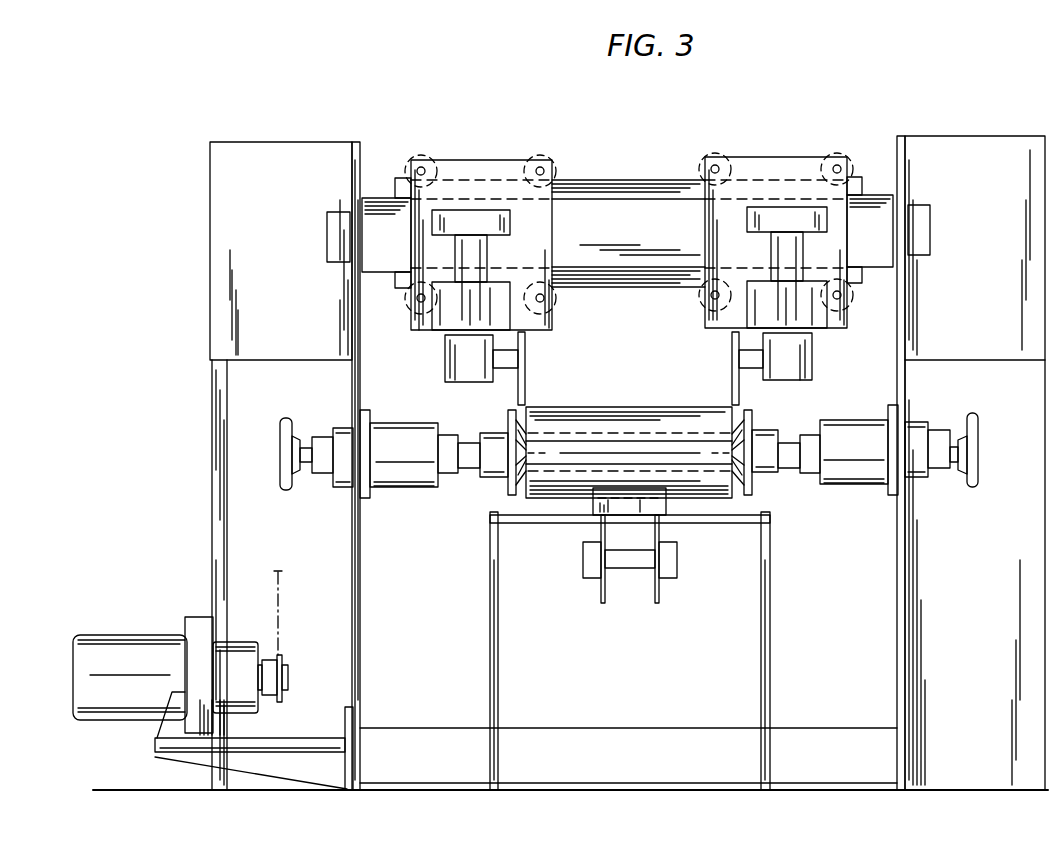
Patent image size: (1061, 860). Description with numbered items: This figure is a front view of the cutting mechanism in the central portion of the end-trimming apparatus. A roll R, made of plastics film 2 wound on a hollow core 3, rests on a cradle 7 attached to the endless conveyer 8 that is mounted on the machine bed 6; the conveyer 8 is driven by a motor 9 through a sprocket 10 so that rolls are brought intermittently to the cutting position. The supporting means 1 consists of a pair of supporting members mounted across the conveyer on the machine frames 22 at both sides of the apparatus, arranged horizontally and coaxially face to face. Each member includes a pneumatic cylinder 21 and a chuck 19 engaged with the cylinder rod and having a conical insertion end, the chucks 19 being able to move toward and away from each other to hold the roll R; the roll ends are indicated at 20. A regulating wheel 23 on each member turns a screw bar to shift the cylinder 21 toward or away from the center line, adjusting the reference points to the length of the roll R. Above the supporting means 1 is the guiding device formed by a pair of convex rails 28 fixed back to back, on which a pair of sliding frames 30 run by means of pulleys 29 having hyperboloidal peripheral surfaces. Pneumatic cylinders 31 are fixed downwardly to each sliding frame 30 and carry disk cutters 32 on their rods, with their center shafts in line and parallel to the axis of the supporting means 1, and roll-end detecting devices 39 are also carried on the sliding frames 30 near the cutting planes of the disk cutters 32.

The supporting means 1 is at (452, 500).
The plastics film 2 is at (590, 410).
The hollow core 3 is at (650, 432).
The roll R is at (632, 408).
The machine bed 6 is at (770, 565).
The cradle 7 is at (596, 500).
The endless conveyer 8 is at (662, 533).
The motor 9 is at (165, 635).
The sprocket 10 is at (282, 668).
The chuck 19 is at (494, 480).
The roll end 20 is at (629, 456).
The pneumatic cylinder 21 is at (402, 488).
The machine frame 22 is at (362, 617).
The regulating wheel 23 is at (283, 480).
The convex rail 28 is at (620, 183).
The pulley 29 is at (425, 156).
The sliding frame 30 is at (548, 218).
The pneumatic cylinder 31 is at (489, 246).
The disk cutter 32 is at (525, 372).
The roll-end detecting device 39 is at (518, 390).